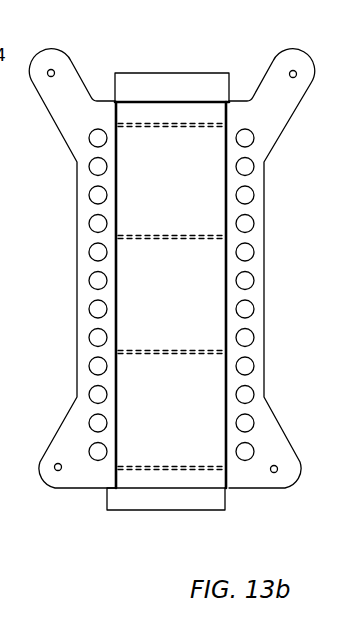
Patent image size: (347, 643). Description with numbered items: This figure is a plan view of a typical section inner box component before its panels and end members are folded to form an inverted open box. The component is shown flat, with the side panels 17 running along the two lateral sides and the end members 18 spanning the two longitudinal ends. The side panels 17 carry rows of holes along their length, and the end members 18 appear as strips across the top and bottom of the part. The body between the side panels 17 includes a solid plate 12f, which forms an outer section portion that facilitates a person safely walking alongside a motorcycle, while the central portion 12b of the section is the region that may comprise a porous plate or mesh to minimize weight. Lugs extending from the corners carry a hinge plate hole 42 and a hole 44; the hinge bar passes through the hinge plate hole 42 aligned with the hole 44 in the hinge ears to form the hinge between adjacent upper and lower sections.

The solid plate 12f is at (205, 378).
The central portion 12b is at (135, 477).
The side panels 17 is at (80, 243).
The end members 18 is at (170, 80).
The hinge plate hole 42 is at (56, 470).
The hole 44 is at (55, 70).